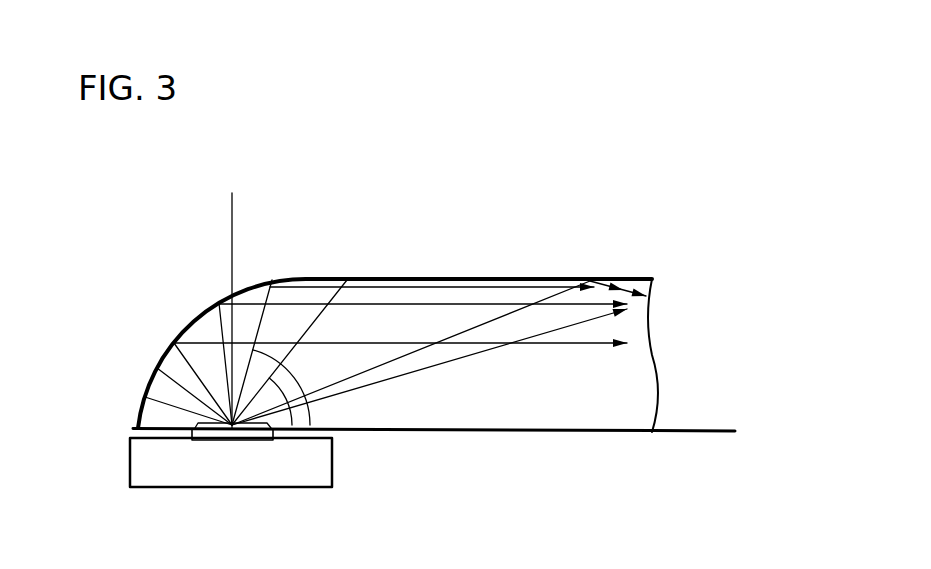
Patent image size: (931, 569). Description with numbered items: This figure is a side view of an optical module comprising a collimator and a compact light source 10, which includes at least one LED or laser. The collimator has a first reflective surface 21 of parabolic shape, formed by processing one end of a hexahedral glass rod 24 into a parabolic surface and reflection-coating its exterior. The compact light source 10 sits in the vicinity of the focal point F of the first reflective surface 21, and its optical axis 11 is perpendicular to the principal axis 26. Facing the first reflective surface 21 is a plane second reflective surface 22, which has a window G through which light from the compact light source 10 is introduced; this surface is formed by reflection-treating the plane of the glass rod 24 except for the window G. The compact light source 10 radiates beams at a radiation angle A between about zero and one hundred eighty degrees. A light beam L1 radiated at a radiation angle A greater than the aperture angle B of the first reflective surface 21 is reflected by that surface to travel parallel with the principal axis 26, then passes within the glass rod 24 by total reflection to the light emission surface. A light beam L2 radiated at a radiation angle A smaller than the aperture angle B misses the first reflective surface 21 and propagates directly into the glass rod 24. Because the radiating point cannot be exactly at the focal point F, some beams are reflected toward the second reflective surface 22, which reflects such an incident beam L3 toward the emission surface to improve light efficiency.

The compact light source 10 is at (208, 487).
The optical axis 11 is at (232, 206).
The first reflective surface 21 is at (255, 290).
The second reflective surface 22 is at (338, 432).
The glass rod 24 is at (448, 278).
The principal axis 26 is at (685, 433).
The focal point F is at (232, 428).
The window G is at (187, 337).
The radiation angle A is at (303, 381).
The aperture angle B is at (269, 381).
The light beam L1 is at (595, 281).
The light beam L2 is at (608, 281).
The incident beam L3 is at (583, 325).